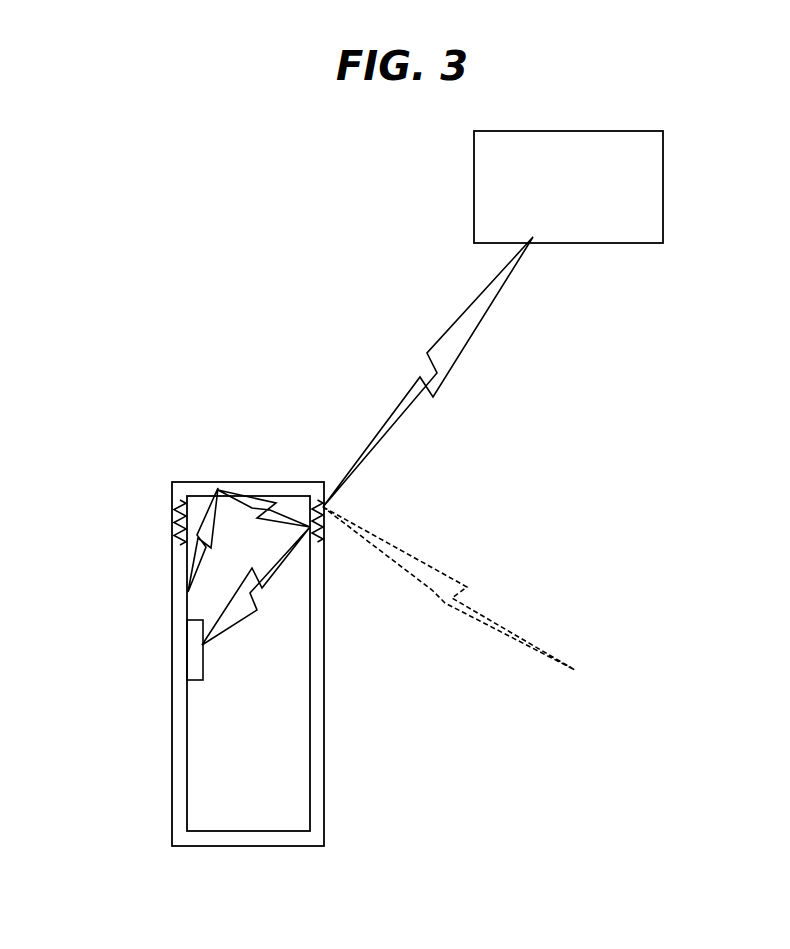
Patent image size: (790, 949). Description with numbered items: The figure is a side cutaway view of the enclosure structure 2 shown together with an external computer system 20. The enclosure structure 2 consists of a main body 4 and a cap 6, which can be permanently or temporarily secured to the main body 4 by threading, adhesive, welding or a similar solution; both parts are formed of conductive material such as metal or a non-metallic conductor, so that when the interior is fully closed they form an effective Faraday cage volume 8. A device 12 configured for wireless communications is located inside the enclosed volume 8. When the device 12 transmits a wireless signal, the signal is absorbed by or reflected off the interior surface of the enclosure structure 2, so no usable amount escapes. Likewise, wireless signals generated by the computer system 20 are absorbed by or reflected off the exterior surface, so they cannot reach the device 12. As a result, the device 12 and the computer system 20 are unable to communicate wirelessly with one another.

The enclosure structure 2 is at (128, 506).
The main body 4 is at (324, 679).
The cap 6 is at (274, 483).
The effective Faraday cage volume 8 is at (248, 663).
The device 12 is at (192, 652).
The computer system 20 is at (568, 187).